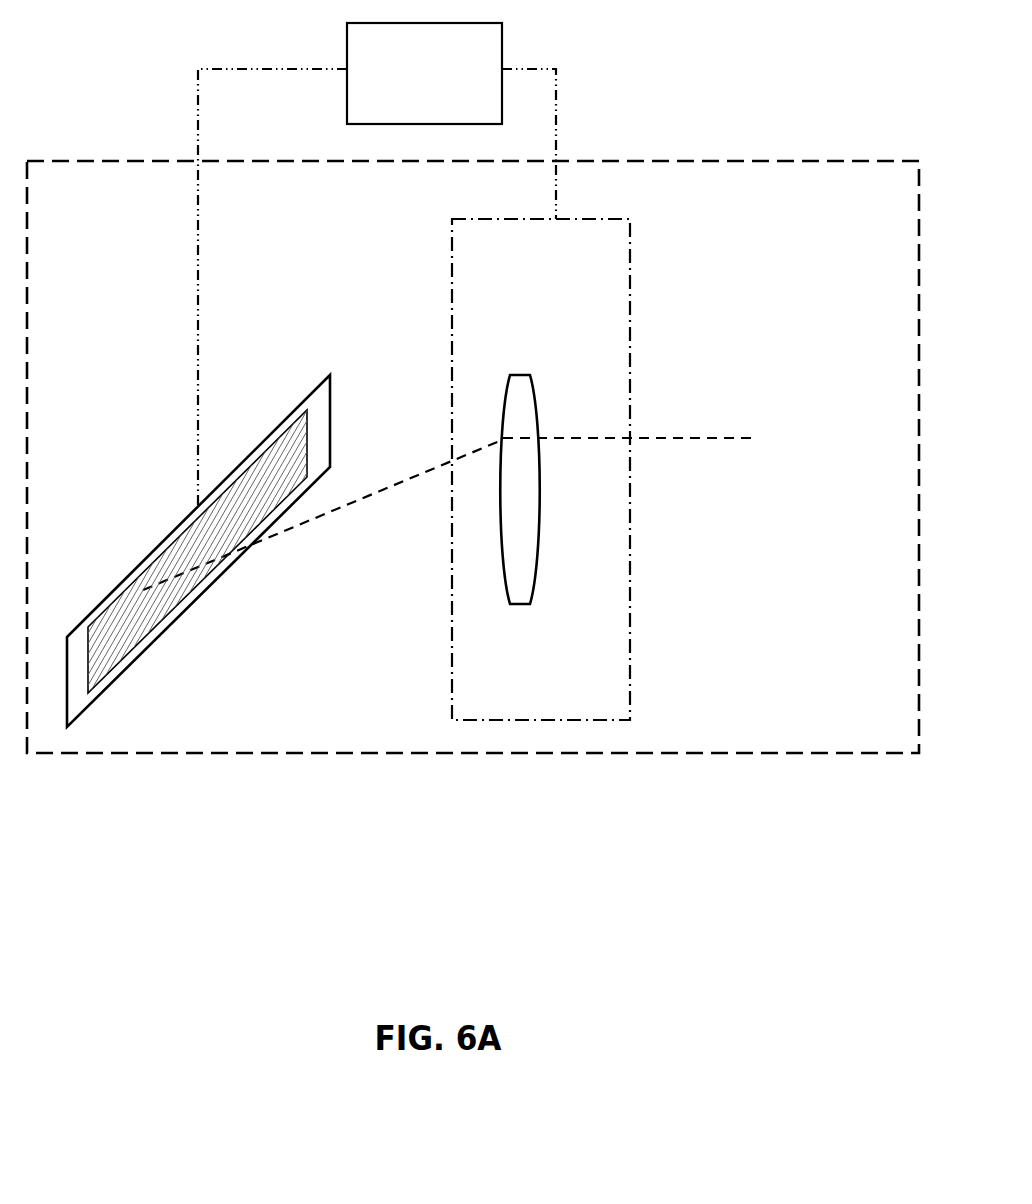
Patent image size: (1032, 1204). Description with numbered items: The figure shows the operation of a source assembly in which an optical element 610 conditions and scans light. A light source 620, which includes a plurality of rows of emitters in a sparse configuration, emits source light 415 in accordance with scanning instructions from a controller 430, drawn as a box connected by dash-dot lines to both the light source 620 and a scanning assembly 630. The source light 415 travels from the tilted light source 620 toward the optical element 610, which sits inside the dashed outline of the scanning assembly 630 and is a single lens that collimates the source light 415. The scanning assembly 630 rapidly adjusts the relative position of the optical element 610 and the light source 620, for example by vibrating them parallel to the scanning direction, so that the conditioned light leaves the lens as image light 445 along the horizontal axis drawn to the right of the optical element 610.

The controller 430 is at (377, 264).
The scanning assembly 630 is at (541, 469).
The optical element 610 is at (530, 375).
The source light 415 is at (392, 488).
The image light 445 is at (698, 439).
The light source 620 is at (87, 707).